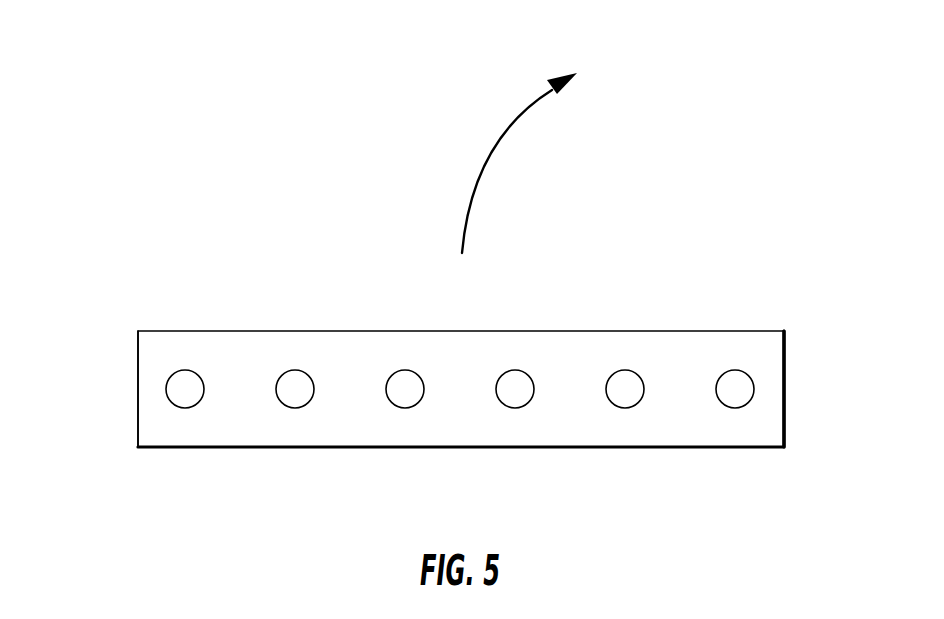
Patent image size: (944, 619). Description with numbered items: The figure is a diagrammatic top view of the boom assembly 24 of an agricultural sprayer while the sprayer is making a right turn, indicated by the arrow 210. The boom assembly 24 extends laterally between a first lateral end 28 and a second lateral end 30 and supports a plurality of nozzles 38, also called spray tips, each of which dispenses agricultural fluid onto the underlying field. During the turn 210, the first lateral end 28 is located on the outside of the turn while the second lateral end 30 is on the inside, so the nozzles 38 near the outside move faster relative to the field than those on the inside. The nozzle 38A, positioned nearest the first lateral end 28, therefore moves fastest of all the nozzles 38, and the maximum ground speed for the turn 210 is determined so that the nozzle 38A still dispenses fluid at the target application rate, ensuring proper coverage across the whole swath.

The boom assembly 24 is at (185, 330).
The first lateral end 28 is at (98, 382).
The second lateral end 30 is at (803, 400).
The nozzle 38A is at (185, 408).
The nozzles 38 is at (300, 407).
The turn 210 is at (490, 150).